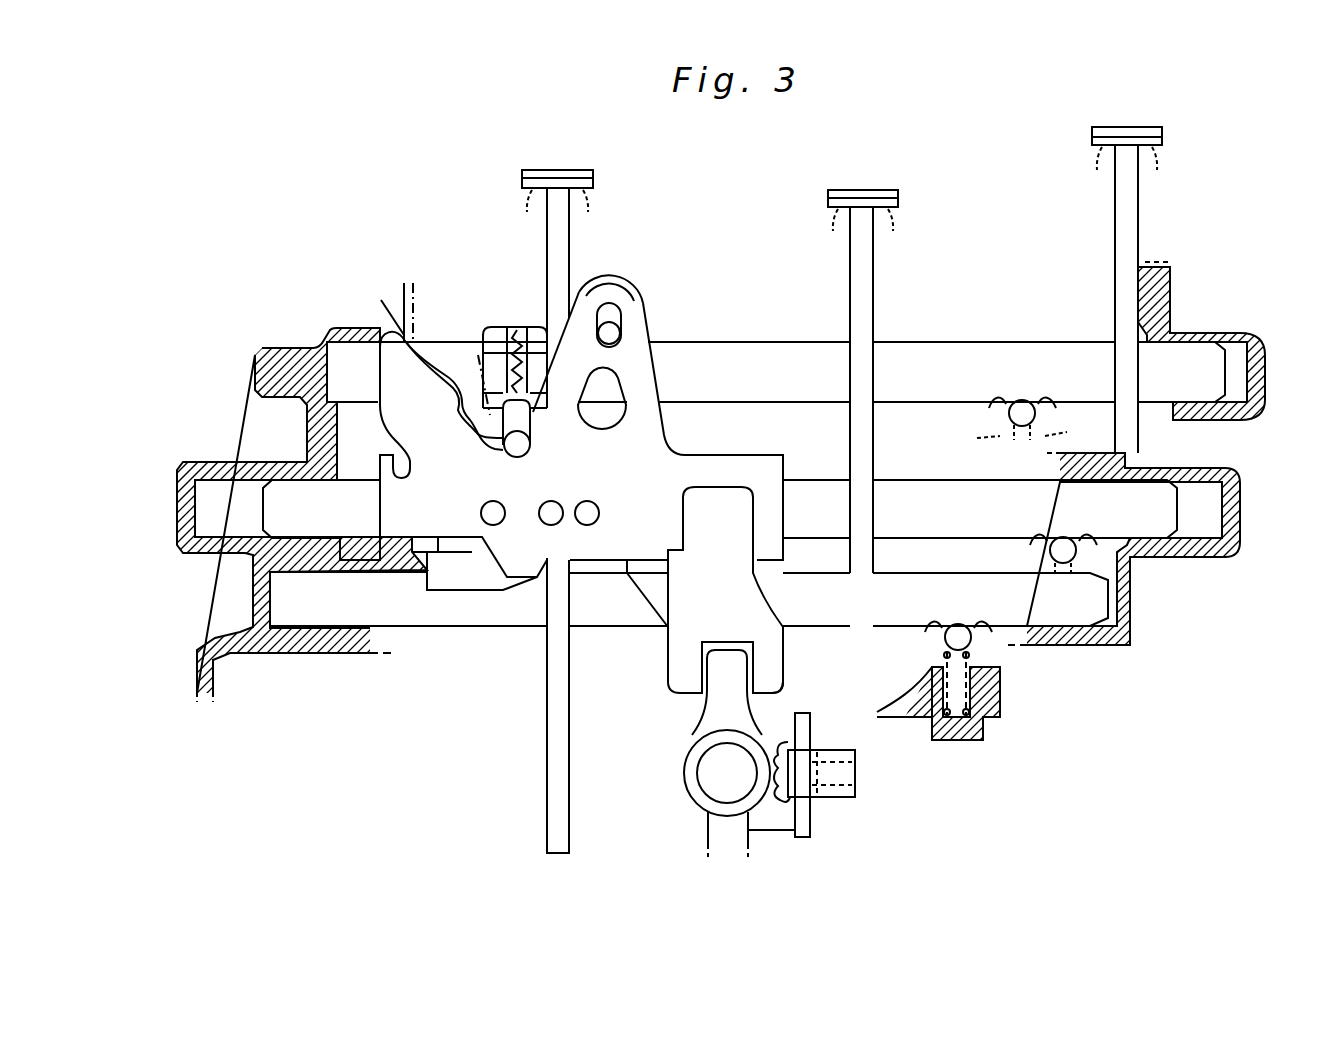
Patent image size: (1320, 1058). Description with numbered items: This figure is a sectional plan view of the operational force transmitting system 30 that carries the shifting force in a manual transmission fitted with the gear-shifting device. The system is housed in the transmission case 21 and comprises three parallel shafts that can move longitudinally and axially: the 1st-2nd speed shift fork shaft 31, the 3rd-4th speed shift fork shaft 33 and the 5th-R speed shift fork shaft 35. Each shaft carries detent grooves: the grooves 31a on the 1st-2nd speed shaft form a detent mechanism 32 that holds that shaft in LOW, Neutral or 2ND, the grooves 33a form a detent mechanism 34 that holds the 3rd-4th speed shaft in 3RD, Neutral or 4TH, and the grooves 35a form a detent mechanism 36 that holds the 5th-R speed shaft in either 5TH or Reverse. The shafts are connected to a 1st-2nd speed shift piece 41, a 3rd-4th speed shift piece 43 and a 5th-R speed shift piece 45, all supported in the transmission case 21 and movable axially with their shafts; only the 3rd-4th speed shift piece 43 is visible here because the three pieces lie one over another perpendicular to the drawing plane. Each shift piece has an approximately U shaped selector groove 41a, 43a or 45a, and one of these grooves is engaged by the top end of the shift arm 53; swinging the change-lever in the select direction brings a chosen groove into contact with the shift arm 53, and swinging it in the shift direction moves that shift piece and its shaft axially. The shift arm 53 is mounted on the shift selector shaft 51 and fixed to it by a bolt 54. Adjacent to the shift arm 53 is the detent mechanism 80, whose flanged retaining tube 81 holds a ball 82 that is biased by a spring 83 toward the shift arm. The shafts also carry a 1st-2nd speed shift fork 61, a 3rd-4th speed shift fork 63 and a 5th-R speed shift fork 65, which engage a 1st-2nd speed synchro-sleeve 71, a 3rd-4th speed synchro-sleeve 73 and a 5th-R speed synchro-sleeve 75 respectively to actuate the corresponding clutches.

The transmission case 21 is at (258, 355).
The operational force transmitting system 30 is at (742, 181).
The 1st-2nd speed shift fork shaft 31 is at (918, 585).
The detent grooves 31a is at (932, 674).
The detent mechanism 32 is at (990, 654).
The 3rd-4th speed shift fork shaft 33 is at (893, 505).
The detent grooves 33a is at (1024, 548).
The detent mechanism 34 is at (1118, 560).
The 5th-R speed shift fork shaft 35 is at (728, 358).
The detent grooves 35a is at (1050, 420).
The detent mechanism 36 is at (1006, 414).
The 1st-2nd speed shift piece 41 is at (691, 596).
The selector groove 41a is at (805, 666).
The 3rd-4th speed shift piece 43 is at (691, 596).
The selector groove 43a is at (805, 666).
The 5th-R speed shift piece 45 is at (670, 646).
The selector groove 45a is at (757, 636).
The shift selector shaft 51 is at (712, 770).
The shift arm 53 is at (702, 727).
The bolt 54 is at (712, 835).
The 1st-2nd speed shift fork 61 is at (561, 256).
The 3rd-4th speed shift fork 63 is at (862, 290).
The 5th-R speed shift fork 65 is at (1132, 240).
The 1st-2nd speed synchro-sleeve 71 is at (593, 178).
The 3rd-4th speed synchro-sleeve 73 is at (898, 192).
The 5th-R speed synchro-sleeve 75 is at (1162, 145).
The detent mechanism 80 is at (831, 774).
The flanged retaining tube 81 is at (858, 770).
The ball 82 is at (816, 798).
The spring 83 is at (828, 758).